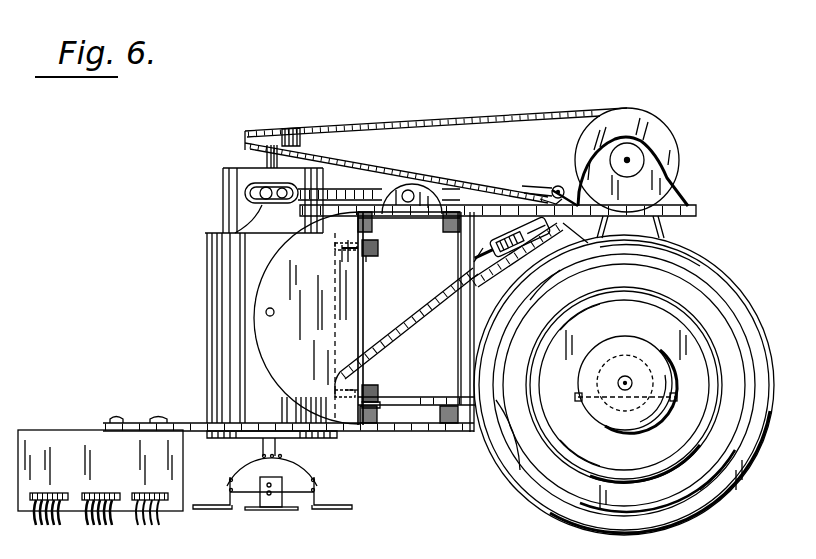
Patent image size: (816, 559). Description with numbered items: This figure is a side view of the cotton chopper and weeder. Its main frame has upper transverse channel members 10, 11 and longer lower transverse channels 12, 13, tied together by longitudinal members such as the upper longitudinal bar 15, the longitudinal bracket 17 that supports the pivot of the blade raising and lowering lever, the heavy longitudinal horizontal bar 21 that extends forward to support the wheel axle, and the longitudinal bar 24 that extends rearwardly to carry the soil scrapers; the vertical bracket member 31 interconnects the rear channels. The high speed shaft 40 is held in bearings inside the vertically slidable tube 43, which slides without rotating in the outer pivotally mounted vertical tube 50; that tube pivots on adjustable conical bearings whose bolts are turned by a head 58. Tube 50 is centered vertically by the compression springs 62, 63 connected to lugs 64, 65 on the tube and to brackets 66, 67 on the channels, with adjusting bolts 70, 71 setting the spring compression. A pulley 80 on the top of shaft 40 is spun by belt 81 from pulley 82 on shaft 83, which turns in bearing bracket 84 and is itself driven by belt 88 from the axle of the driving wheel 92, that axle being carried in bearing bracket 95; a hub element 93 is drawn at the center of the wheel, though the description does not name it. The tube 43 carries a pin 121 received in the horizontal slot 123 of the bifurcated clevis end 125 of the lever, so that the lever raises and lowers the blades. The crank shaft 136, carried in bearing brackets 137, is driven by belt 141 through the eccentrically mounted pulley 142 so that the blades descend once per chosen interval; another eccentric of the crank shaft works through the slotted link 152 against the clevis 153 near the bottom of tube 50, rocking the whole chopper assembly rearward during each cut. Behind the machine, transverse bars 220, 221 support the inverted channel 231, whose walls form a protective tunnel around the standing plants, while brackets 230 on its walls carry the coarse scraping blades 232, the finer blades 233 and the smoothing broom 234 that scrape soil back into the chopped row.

The upper channel member 10 is at (373, 223).
The upper channel member 11 is at (444, 222).
The lower transverse channel 12 is at (368, 426).
The lower transverse channel 13 is at (445, 426).
The upper longitudinal bar 15 is at (597, 207).
The longitudinal bracket 17 is at (396, 196).
The longitudinal horizontal bar 21 is at (425, 398).
The longitudinal bar 24 is at (182, 423).
The vertical bracket member 31 is at (272, 346).
The shaft 40 is at (265, 157).
The vertically slidable tube 43 is at (235, 205).
The outer pivotally mounted vertical tube 50 is at (218, 290).
The head 58 is at (270, 316).
The compression spring 62 is at (342, 250).
The compression spring 63 is at (346, 388).
The lug 64 is at (336, 246).
The lug 65 is at (338, 396).
The bracket 66 is at (370, 258).
The bracket 67 is at (384, 406).
The adjusting bolt 70 is at (379, 250).
The adjusting bolt 71 is at (384, 392).
The pulley 80 is at (284, 130).
The belt 81 is at (432, 121).
The pulley 82 is at (655, 131).
The shaft 83 is at (632, 160).
The bearing bracket 84 is at (678, 207).
The belt 88 is at (662, 241).
The wheel 92 is at (690, 508).
The hub 93 is at (600, 419).
The bearing bracket 95 is at (663, 368).
The pin 121 is at (262, 205).
The horizontal slot 123 is at (240, 187).
The bifurcated clevis end 125 is at (293, 205).
The crank shaft 136 is at (496, 247).
The bearing bracket 137 is at (499, 233).
The belt 141 is at (505, 276).
The pulley 142 is at (533, 187).
The link 152 is at (418, 313).
The clevis 153 is at (335, 375).
The transverse bar 220 is at (159, 418).
The transverse bar 221 is at (112, 418).
The bracket 230 is at (98, 492).
The inverted trough or channel 231 is at (60, 432).
The scraping blade 232 is at (165, 516).
The finer blade 233 is at (98, 527).
The smoothing blade or broom 234 is at (33, 526).